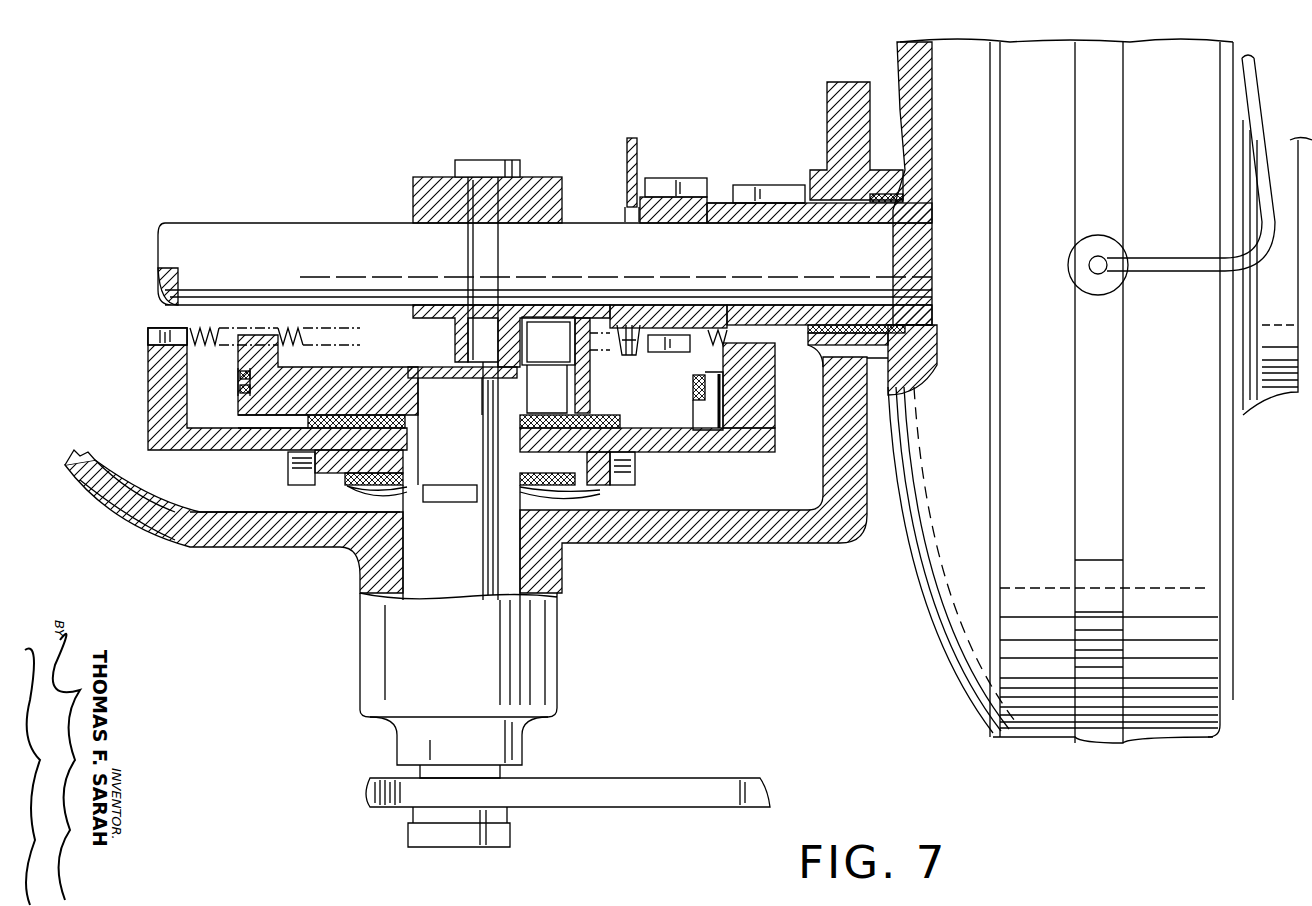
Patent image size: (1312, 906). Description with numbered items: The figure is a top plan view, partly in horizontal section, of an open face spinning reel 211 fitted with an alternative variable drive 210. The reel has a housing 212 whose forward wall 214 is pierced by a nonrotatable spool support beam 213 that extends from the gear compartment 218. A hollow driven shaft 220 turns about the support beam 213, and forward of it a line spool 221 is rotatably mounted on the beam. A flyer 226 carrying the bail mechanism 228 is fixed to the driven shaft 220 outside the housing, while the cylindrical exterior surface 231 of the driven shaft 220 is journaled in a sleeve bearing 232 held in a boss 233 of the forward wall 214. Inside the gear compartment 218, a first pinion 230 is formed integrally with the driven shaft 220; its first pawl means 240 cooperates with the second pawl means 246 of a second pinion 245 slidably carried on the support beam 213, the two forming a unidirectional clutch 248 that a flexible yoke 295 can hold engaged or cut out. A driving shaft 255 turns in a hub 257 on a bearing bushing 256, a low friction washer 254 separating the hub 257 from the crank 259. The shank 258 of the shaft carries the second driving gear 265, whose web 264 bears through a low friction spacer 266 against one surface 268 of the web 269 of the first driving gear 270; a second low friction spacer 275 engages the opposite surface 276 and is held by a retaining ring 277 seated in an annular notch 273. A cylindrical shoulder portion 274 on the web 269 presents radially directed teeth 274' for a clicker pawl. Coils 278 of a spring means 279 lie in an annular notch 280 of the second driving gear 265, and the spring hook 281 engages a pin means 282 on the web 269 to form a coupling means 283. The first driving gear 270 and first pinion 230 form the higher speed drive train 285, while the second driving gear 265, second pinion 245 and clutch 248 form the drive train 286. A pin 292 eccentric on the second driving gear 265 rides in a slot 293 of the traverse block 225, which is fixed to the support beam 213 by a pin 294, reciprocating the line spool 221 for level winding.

The variable drive 210 is at (720, 500).
The open face spinning reel 211 is at (1077, 770).
The housing 212 is at (100, 500).
The support beam 213 is at (292, 222).
The forward wall 214 is at (850, 425).
The gear compartment 218 is at (212, 500).
The driven shaft 220 is at (915, 215).
The line spool 221 is at (1243, 415).
The traverse block 225 is at (425, 178).
The flyer 226 is at (950, 668).
The bail mechanism 228 is at (1173, 275).
The first pinion 230 is at (785, 185).
The cylindrical exterior surface 231 is at (895, 350).
The sleeve bearing 232 is at (880, 200).
The boss 233 is at (900, 170).
The first pawl means 240 is at (722, 205).
The second pinion 245 is at (670, 178).
The second pawl means 246 is at (715, 310).
The unidirectional clutch 248 is at (715, 190).
The low friction washer 254 is at (430, 770).
The driving shaft 255 is at (438, 573).
The bearing bushing 256 is at (392, 600).
The hub 257 is at (555, 592).
The shank 258 is at (430, 385).
The crank 259 is at (635, 785).
The web 264 is at (420, 398).
The second driving gear 265 is at (320, 365).
The low friction spacer 266 is at (408, 420).
The surface 268 is at (280, 422).
The web 269 is at (272, 450).
The first driving gear 270 is at (146, 410).
The annular notch 273 is at (465, 495).
The cylindrical shoulder portion 274 is at (279, 471).
The radially directed teeth 274' is at (644, 468).
The second low friction spacer 275 is at (400, 480).
The opposite surface 276 is at (590, 495).
The retaining ring 277 is at (350, 495).
The coils 278 is at (252, 388).
The spring means 279 is at (240, 378).
The annular notch 280 is at (245, 397).
The hook 281 is at (721, 405).
The pin means 282 is at (700, 390).
The coupling means 283 is at (770, 325).
The drive train 285 is at (810, 360).
The drive train 286 is at (632, 325).
The pin 292 is at (556, 365).
The slot 293 is at (525, 330).
The pin 294 is at (490, 165).
The flexible yoke 295 is at (624, 134).